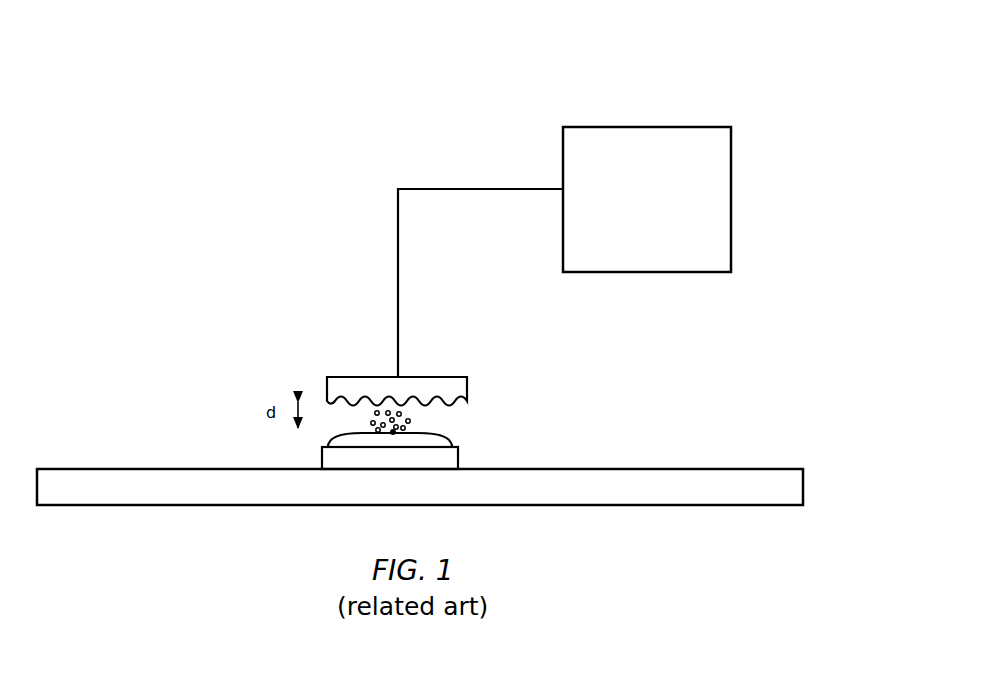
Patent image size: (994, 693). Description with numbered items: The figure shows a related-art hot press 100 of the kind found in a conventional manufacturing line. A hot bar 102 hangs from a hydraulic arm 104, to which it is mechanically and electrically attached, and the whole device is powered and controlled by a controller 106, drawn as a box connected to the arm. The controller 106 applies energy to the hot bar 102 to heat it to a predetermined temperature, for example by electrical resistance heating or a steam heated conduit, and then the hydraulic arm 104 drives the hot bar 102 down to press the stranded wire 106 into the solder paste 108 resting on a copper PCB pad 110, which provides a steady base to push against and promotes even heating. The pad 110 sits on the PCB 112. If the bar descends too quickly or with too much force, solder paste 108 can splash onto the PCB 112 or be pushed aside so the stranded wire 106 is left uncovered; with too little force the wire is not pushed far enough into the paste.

The related-art system 100 is at (131, 118).
The hot bar 102 is at (455, 377).
The hydraulic arm 104 is at (394, 271).
The controller 106 is at (418, 419).
The solder paste 108 is at (456, 434).
The copper PCB pad 110 is at (460, 458).
The PCB 112 is at (420, 487).